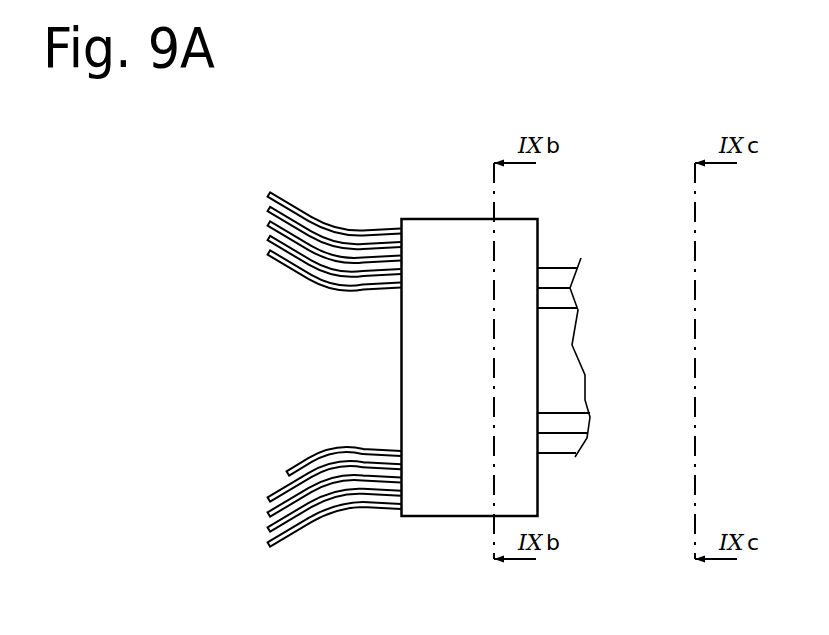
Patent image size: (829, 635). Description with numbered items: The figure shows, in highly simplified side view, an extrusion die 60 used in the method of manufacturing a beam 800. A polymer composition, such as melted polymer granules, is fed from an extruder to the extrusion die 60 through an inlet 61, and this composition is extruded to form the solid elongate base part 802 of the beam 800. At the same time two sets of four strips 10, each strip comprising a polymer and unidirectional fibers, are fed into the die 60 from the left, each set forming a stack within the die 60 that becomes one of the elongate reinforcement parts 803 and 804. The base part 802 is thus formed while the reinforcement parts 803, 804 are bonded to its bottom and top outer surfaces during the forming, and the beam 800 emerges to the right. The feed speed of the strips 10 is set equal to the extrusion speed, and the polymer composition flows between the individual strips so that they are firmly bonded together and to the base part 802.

The strips 10 is at (333, 234).
The extrusion die 60 is at (555, 188).
The inlet 61 is at (380, 369).
The beam 800 is at (606, 336).
The base part 802 is at (562, 374).
The elongate reinforcement part 803 is at (571, 440).
The elongate reinforcement part 804 is at (562, 277).